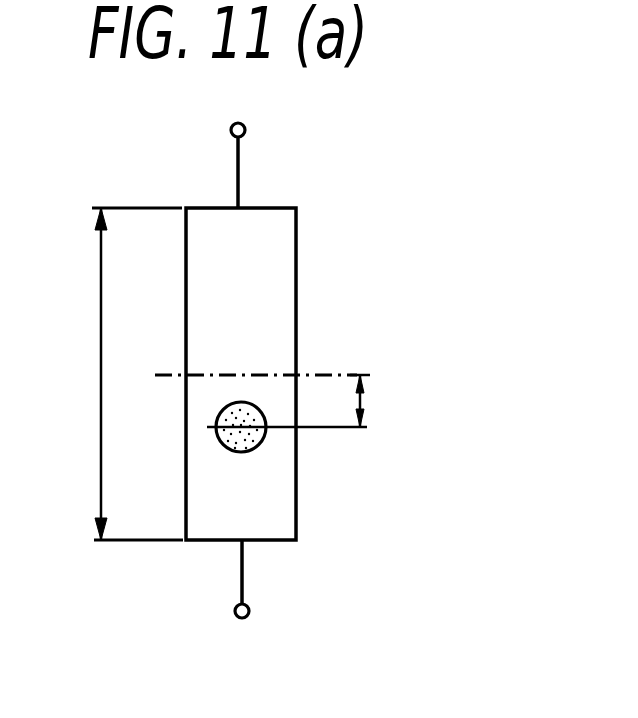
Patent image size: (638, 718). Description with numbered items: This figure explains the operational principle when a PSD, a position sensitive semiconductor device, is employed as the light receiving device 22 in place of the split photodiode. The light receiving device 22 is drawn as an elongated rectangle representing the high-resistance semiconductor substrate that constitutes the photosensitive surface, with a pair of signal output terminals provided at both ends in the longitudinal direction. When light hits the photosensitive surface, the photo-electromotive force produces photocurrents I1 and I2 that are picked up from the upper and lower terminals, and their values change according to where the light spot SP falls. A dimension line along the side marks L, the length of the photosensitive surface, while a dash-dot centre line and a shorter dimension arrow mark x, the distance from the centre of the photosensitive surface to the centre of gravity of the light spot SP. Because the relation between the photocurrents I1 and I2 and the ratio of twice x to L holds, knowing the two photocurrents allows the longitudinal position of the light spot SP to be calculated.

The light receiving device 22 is at (297, 252).
The light spot SP is at (258, 448).
The photocurrent I1 is at (219, 159).
The photocurrent I2 is at (222, 591).
The length of the photosensitive surface L is at (128, 374).
The distance from center of photosensitive surface to center of gravity of light spo x is at (270, 401).